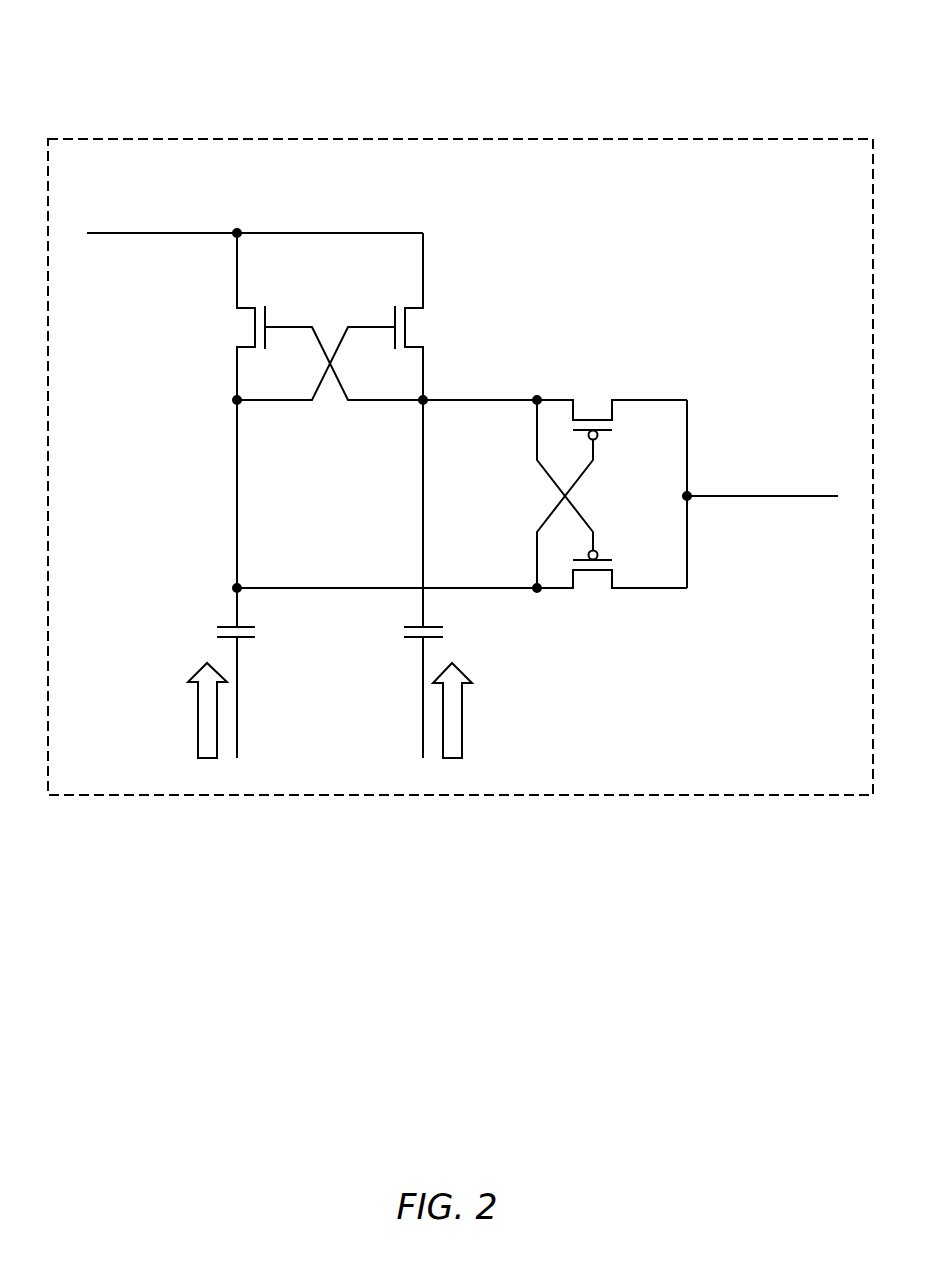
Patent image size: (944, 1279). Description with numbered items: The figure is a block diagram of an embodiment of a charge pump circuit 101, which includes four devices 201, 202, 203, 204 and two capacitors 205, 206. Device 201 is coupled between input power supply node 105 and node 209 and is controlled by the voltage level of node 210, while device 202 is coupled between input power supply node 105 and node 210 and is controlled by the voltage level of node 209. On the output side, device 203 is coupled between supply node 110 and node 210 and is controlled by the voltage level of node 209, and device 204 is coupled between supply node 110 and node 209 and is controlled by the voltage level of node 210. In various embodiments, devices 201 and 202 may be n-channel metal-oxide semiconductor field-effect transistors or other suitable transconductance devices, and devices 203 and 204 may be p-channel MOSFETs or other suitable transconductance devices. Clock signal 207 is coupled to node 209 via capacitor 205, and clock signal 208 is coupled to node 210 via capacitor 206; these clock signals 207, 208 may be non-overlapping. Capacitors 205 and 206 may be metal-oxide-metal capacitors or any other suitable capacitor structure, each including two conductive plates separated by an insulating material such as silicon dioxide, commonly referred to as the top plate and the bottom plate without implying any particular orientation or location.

The charge pump circuit 101 is at (539, 138).
The input power supply node 105 is at (255, 221).
The supply node 110 is at (760, 494).
The device 201 is at (245, 326).
The device 202 is at (426, 326).
The device 203 is at (593, 410).
The device 204 is at (592, 580).
The capacitor 205 is at (216, 627).
The capacitor 206 is at (442, 627).
The clock signal 207 is at (197, 723).
The clock signal 208 is at (463, 718).
The node 209 is at (238, 452).
The node 210 is at (422, 533).